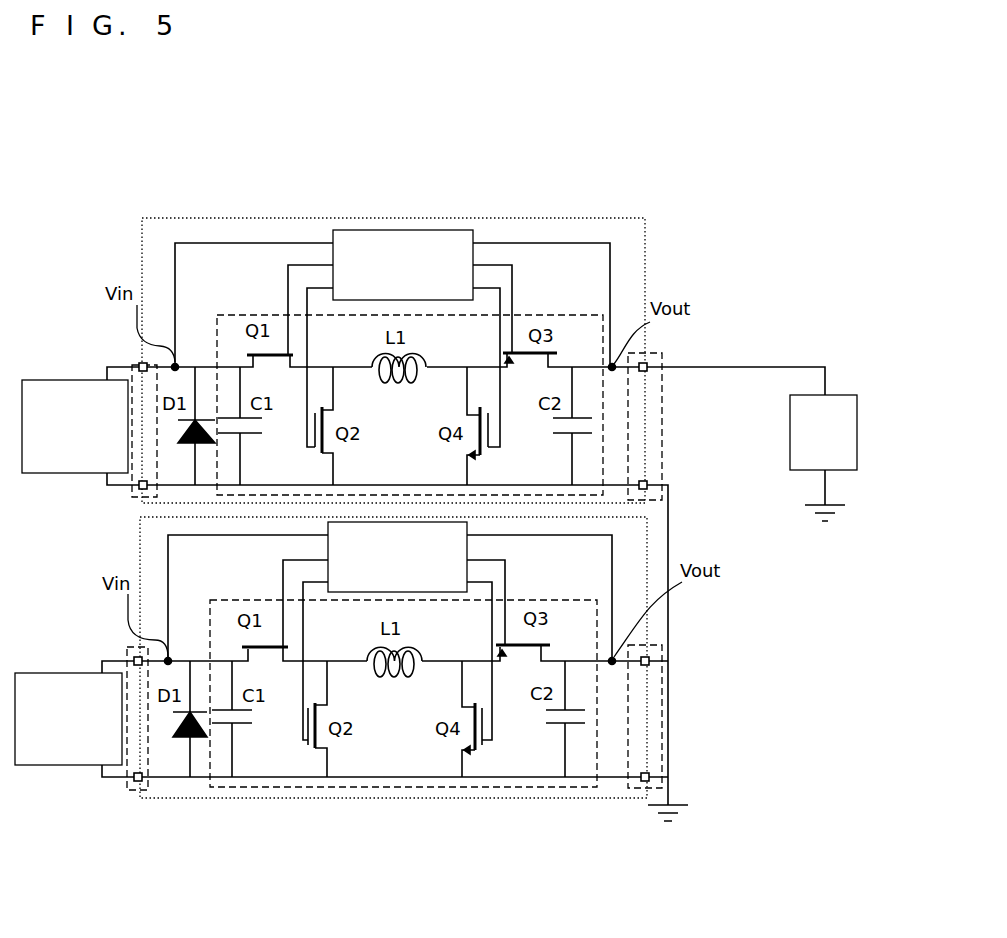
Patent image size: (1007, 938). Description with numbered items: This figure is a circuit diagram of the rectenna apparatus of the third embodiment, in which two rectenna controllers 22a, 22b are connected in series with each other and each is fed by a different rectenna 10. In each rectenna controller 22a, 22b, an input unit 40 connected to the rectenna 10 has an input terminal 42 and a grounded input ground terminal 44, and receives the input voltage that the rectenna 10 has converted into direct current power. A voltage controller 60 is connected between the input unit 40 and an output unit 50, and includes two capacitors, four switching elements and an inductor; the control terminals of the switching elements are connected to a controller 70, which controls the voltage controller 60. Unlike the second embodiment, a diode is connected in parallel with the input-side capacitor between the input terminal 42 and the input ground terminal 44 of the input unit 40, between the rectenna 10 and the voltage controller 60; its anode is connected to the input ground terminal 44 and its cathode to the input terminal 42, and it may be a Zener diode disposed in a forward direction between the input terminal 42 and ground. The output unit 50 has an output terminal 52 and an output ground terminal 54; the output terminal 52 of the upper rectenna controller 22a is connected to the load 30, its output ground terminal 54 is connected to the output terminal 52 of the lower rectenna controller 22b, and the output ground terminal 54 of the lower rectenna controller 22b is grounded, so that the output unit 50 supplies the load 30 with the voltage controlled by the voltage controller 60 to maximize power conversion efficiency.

The rectenna 10 is at (85, 380).
The rectenna controller 22a is at (535, 218).
The rectenna controller 22b is at (140, 560).
The load 30 is at (834, 395).
The input unit 40 is at (137, 356).
The input terminal 42 is at (135, 367).
The input ground terminal 44 is at (138, 491).
The output unit 50 is at (663, 420).
The output terminal 52 is at (648, 365).
The output ground terminal 54 is at (648, 483).
The voltage controller 60 is at (533, 316).
The controller 70 is at (455, 231).